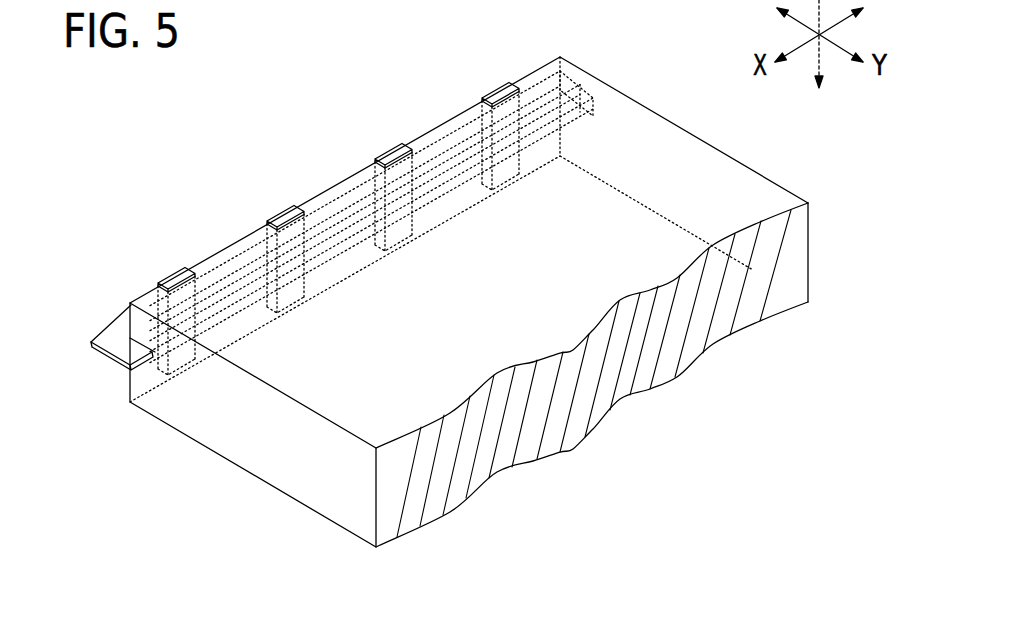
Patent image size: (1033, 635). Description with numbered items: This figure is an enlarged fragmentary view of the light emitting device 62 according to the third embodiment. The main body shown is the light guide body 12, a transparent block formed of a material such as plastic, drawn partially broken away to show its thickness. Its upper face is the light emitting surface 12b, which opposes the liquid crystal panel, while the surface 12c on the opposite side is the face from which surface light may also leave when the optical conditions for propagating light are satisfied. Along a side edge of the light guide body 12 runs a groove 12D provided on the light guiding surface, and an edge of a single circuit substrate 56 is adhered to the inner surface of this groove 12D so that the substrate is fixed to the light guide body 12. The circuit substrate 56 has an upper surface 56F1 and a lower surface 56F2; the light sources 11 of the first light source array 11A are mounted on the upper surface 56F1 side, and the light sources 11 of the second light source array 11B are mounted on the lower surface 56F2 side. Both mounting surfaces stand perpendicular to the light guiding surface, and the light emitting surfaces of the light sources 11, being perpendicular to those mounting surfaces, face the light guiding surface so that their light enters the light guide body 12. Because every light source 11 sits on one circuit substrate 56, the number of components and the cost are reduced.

The light emitting device 62 is at (330, 125).
The light emitting surface 12b is at (682, 150).
The first light source array 11A is at (192, 256).
The light source 11 is at (338, 297).
The upper surface 56F1 is at (108, 323).
The circuit substrate 56 is at (90, 330).
The lower surface 56F2 is at (114, 357).
The groove 12D is at (138, 396).
The second light source array 11B is at (189, 381).
The light guide body 12 is at (465, 322).
The surface opposite the light emitting surface 12c is at (313, 508).